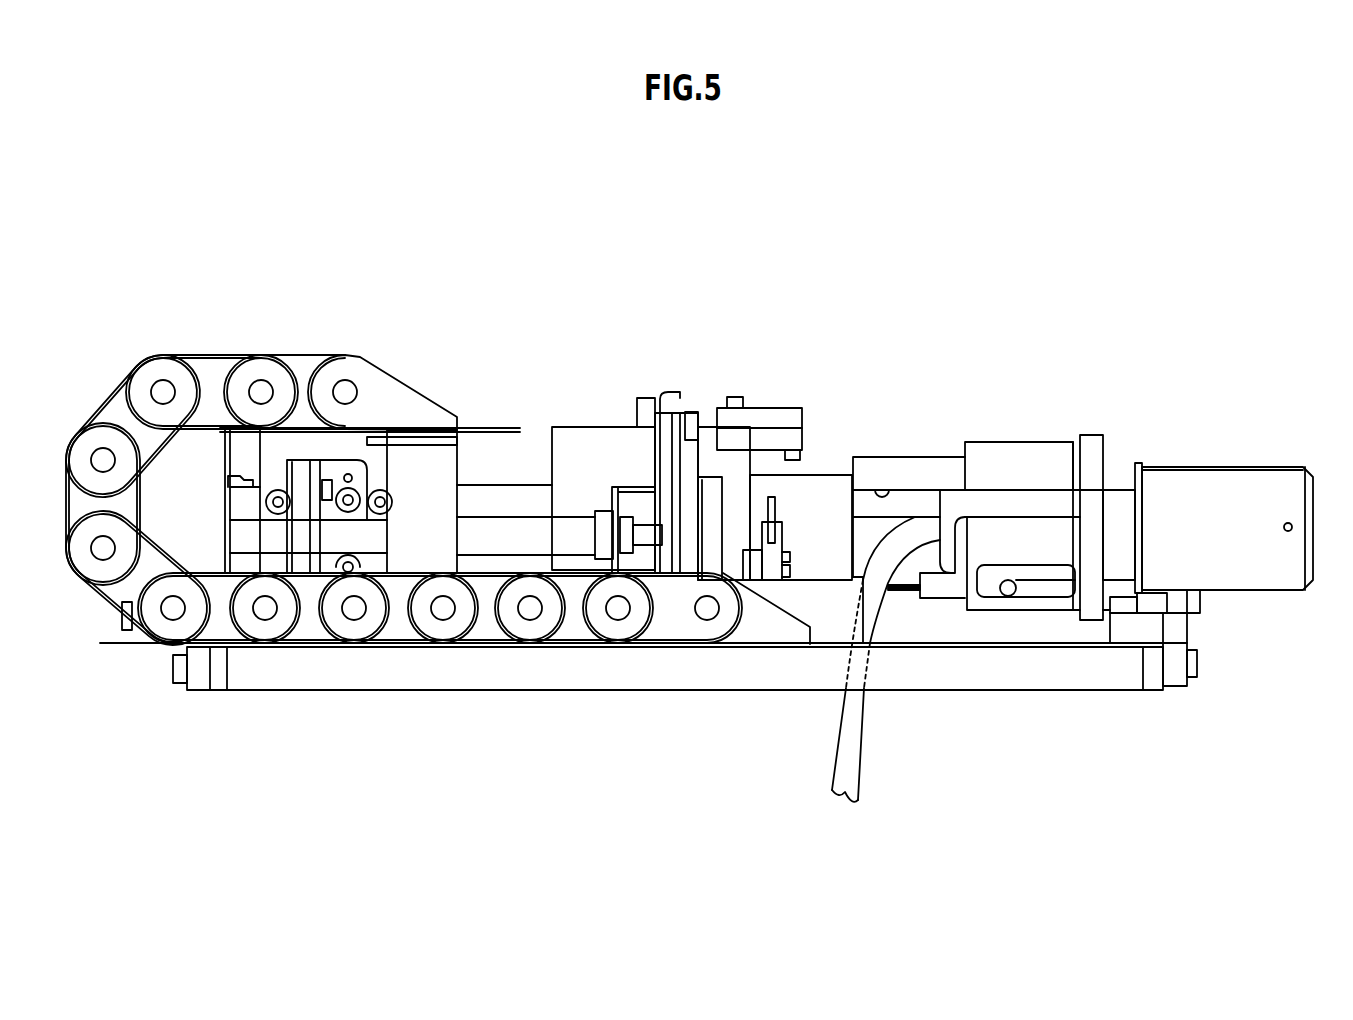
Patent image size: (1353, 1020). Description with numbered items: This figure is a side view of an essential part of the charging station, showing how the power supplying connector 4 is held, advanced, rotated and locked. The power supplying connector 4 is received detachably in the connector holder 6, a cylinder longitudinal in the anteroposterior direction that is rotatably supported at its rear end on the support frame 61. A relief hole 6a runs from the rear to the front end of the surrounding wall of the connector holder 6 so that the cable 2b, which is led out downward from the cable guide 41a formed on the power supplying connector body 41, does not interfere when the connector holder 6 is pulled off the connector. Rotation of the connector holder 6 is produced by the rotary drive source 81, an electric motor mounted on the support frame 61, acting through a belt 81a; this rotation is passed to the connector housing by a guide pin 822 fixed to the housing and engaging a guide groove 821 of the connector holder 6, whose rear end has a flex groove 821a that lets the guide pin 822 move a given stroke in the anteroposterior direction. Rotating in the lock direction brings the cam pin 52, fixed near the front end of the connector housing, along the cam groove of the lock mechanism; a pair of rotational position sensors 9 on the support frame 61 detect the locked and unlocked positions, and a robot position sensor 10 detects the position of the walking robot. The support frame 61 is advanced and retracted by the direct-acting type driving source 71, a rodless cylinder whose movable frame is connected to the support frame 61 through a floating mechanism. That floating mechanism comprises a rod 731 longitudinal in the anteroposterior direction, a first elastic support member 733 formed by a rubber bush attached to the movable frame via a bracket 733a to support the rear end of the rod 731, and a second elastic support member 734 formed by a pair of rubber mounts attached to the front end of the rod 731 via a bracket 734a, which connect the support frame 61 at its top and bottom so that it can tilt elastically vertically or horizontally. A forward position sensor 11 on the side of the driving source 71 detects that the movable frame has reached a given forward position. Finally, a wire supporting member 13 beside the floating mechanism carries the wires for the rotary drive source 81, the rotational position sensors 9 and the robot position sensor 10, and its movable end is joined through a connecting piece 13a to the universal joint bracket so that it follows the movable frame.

The wire supporting member 13 is at (280, 356).
The connecting piece 13a is at (400, 455).
The first elastic support member 733 is at (300, 558).
The bracket 733a is at (335, 460).
The rod 731 is at (520, 543).
The direct-acting type driving source 71 is at (510, 492).
The rotary drive source 81 is at (560, 425).
The belt 81a is at (710, 560).
The second elastic support member 734 is at (677, 398).
The bracket 734a is at (635, 478).
The support frame 61 is at (708, 427).
The robot position sensor 10 is at (803, 432).
The rotational position sensor 9 is at (784, 547).
The connector holder 6 is at (973, 442).
The relief hole 6a is at (882, 490).
The cable guide 41a is at (913, 560).
The cable 2b is at (858, 745).
The guide groove 821 is at (1065, 595).
The flex groove 821a is at (1000, 598).
The guide pin 822 is at (1005, 578).
The power supplying connector 4 is at (1262, 476).
The power supplying connector body 41 is at (1278, 592).
The cam pin 52 is at (1292, 526).
The forward position sensor 11 is at (1160, 605).